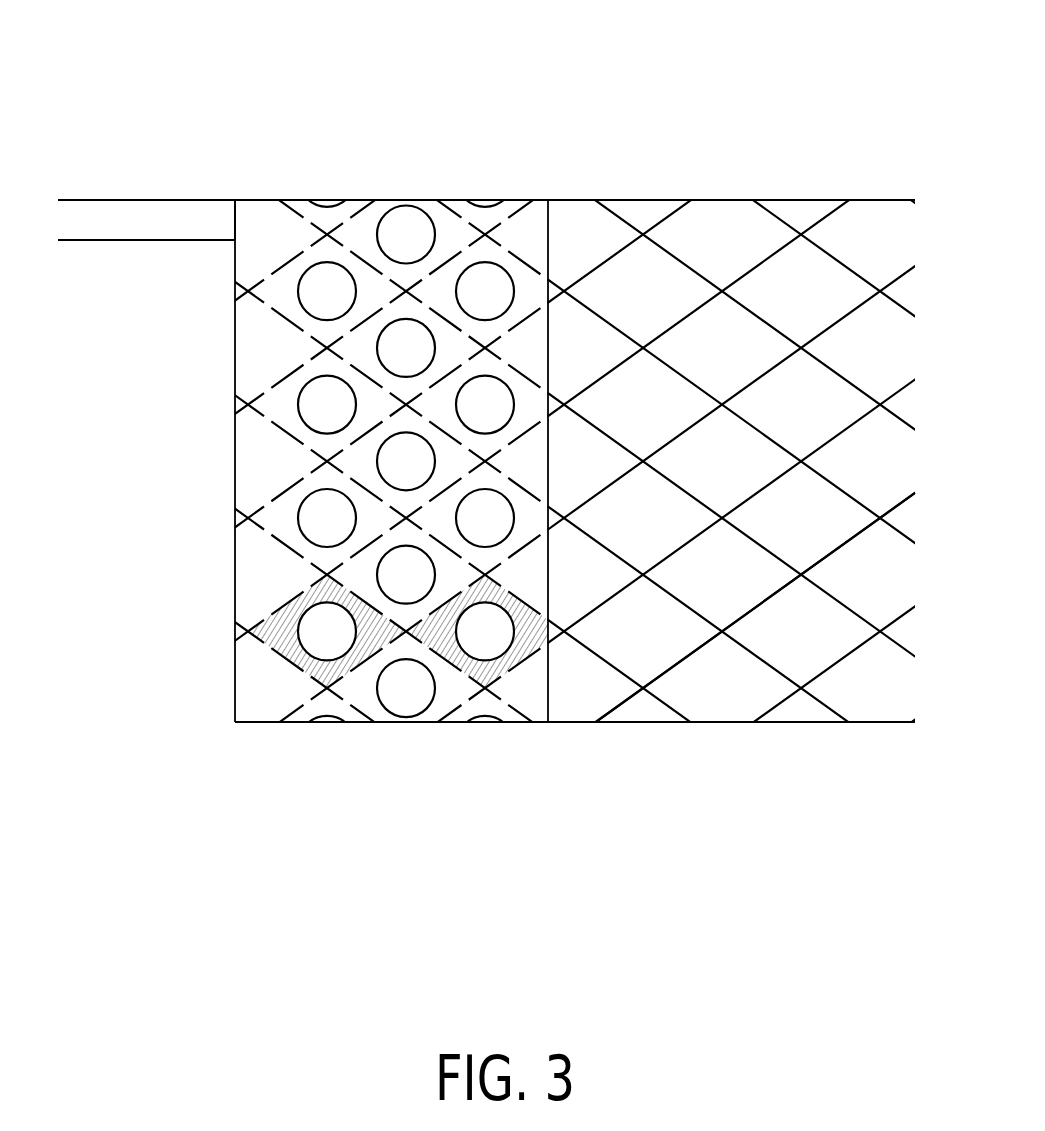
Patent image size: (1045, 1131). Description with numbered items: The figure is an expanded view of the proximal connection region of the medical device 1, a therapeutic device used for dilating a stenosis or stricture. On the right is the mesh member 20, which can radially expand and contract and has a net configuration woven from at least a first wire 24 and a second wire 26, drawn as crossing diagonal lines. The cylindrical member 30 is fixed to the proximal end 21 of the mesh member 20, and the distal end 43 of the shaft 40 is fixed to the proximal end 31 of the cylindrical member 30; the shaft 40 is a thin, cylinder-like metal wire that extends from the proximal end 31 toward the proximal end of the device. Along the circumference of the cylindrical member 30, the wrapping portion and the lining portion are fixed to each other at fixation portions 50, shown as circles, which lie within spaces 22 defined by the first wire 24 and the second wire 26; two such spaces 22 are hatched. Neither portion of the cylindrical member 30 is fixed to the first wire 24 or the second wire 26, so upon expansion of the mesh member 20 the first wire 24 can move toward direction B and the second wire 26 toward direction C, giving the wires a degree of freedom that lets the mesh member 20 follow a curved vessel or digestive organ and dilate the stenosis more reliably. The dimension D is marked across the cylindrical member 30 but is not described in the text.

The medical device 1 is at (578, 78).
The mesh member 20 is at (564, 565).
The proximal end of the mesh member 21 is at (234, 725).
The spaces 22 is at (305, 665).
The first wire 24 is at (668, 250).
The second wire 26 is at (625, 703).
The cylindrical member 30 is at (534, 693).
The proximal end of the cylindrical member 31 is at (234, 602).
The shaft 40 is at (167, 212).
The distal end of the shaft 43 is at (235, 198).
The fixation portions 50 is at (313, 408).
The direction B is at (255, 336).
The direction C is at (253, 505).
The width D is at (406, 199).